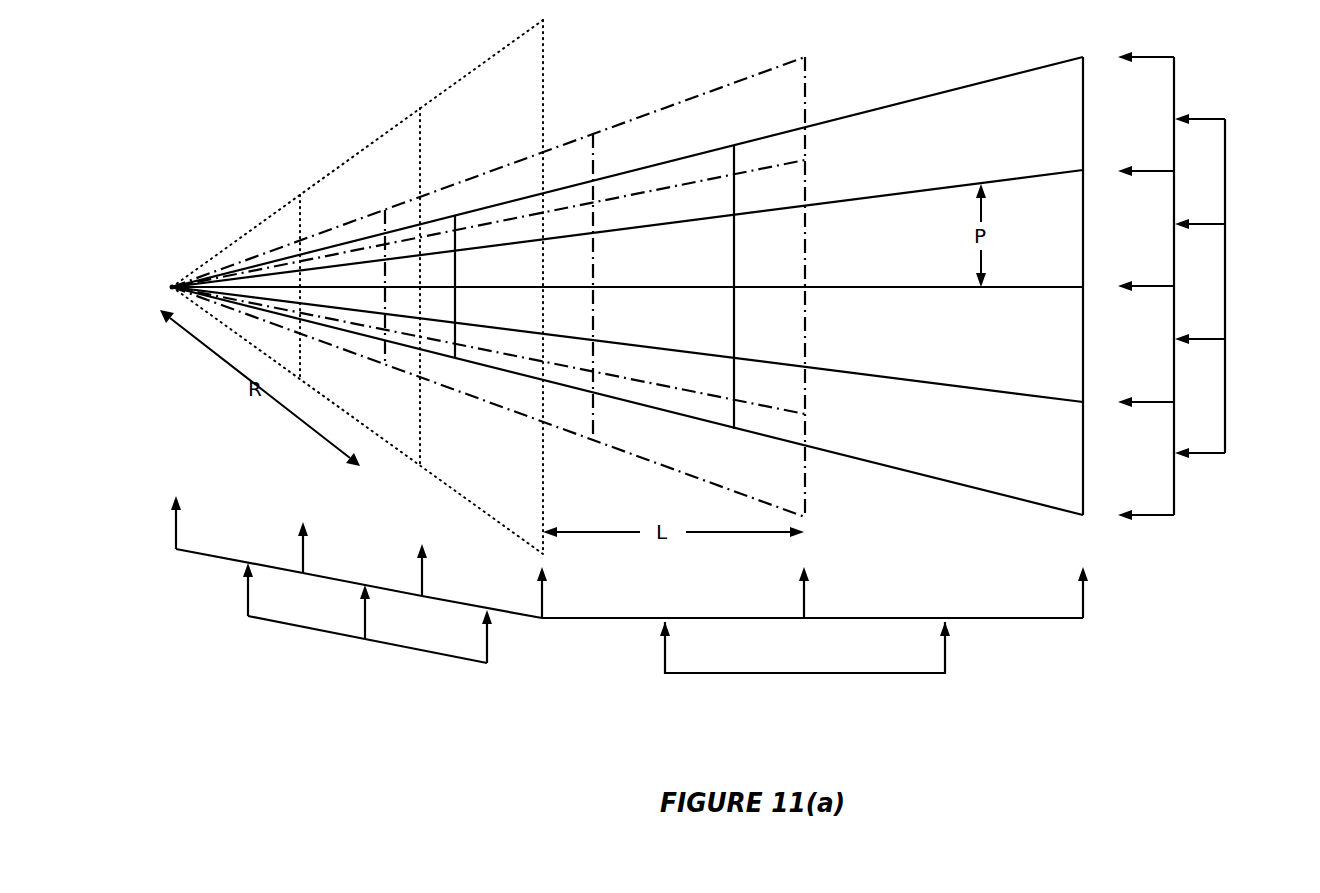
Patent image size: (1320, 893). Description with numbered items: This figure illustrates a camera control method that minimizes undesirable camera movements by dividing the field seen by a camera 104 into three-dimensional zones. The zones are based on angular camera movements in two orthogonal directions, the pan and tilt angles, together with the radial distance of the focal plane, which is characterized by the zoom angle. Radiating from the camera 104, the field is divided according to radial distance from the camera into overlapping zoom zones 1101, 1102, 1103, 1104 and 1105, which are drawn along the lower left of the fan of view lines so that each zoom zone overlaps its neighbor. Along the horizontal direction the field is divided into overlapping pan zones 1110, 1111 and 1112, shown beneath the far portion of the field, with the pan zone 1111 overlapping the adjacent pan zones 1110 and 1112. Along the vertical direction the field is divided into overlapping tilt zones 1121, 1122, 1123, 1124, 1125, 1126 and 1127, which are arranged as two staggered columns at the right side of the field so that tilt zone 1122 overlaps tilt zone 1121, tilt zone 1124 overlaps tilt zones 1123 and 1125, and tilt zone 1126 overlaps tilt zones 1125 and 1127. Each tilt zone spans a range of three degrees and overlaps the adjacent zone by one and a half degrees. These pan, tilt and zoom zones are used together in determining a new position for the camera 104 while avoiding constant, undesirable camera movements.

The camera 104 is at (174, 287).
The zoom zone 1101 is at (231, 506).
The zoom zone 1102 is at (324, 594).
The zoom zone 1103 is at (354, 524).
The zoom zone 1104 is at (434, 614).
The zoom zone 1105 is at (476, 552).
The pan zone 1110 is at (651, 572).
The pan zone 1111 is at (750, 641).
The pan zone 1112 is at (934, 572).
The tilt zone 1121 is at (1128, 95).
The tilt zone 1122 is at (1236, 174).
The tilt zone 1123 is at (1128, 208).
The tilt zone 1124 is at (1236, 276).
The tilt zone 1125 is at (1128, 333).
The tilt zone 1126 is at (1236, 397).
The tilt zone 1127 is at (1128, 442).